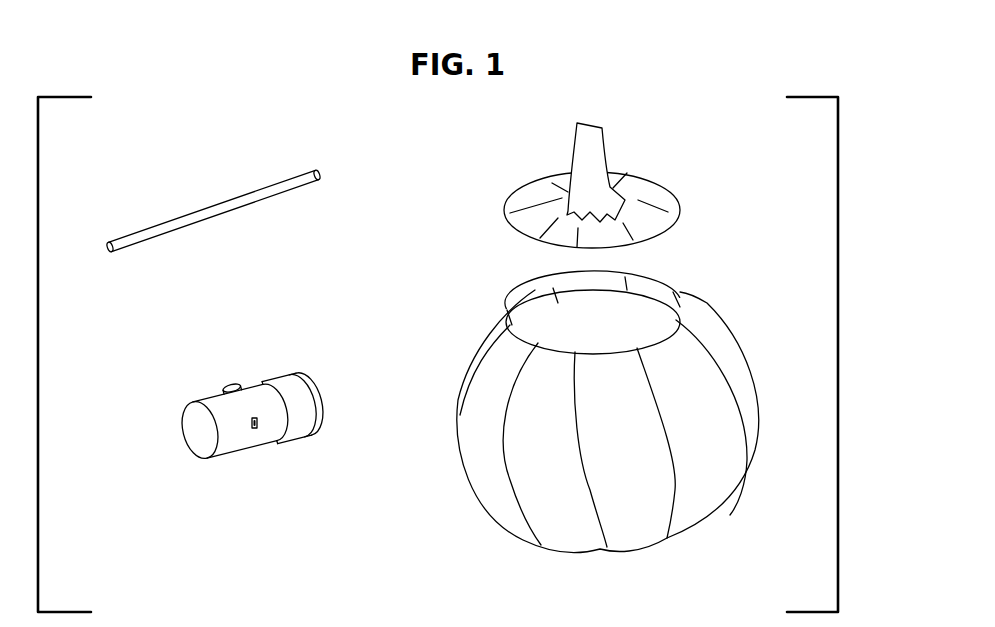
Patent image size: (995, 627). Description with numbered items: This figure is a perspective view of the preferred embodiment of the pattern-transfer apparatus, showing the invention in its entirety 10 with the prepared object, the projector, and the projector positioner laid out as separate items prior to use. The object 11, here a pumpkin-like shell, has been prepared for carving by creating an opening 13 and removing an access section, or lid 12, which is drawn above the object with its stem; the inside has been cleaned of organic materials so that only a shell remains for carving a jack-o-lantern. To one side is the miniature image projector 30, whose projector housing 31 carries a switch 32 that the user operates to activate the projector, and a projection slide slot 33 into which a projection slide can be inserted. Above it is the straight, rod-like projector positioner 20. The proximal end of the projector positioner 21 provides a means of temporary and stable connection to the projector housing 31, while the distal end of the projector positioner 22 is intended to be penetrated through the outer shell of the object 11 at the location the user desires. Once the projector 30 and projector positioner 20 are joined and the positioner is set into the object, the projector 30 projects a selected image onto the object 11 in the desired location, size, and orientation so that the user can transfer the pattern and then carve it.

The invention in its entirety 10 is at (815, 533).
The object 11 is at (517, 538).
The lid 12 is at (663, 197).
The opening 13 is at (565, 322).
The projector positioner 20 is at (191, 185).
The proximal end of the projector positioner 21 is at (102, 243).
The distal end of the projector positioner 22 is at (318, 170).
The miniature image projector 30 is at (264, 434).
The projector housing 31 is at (237, 428).
The switch 32 is at (232, 391).
The projection slide slot 33 is at (258, 428).